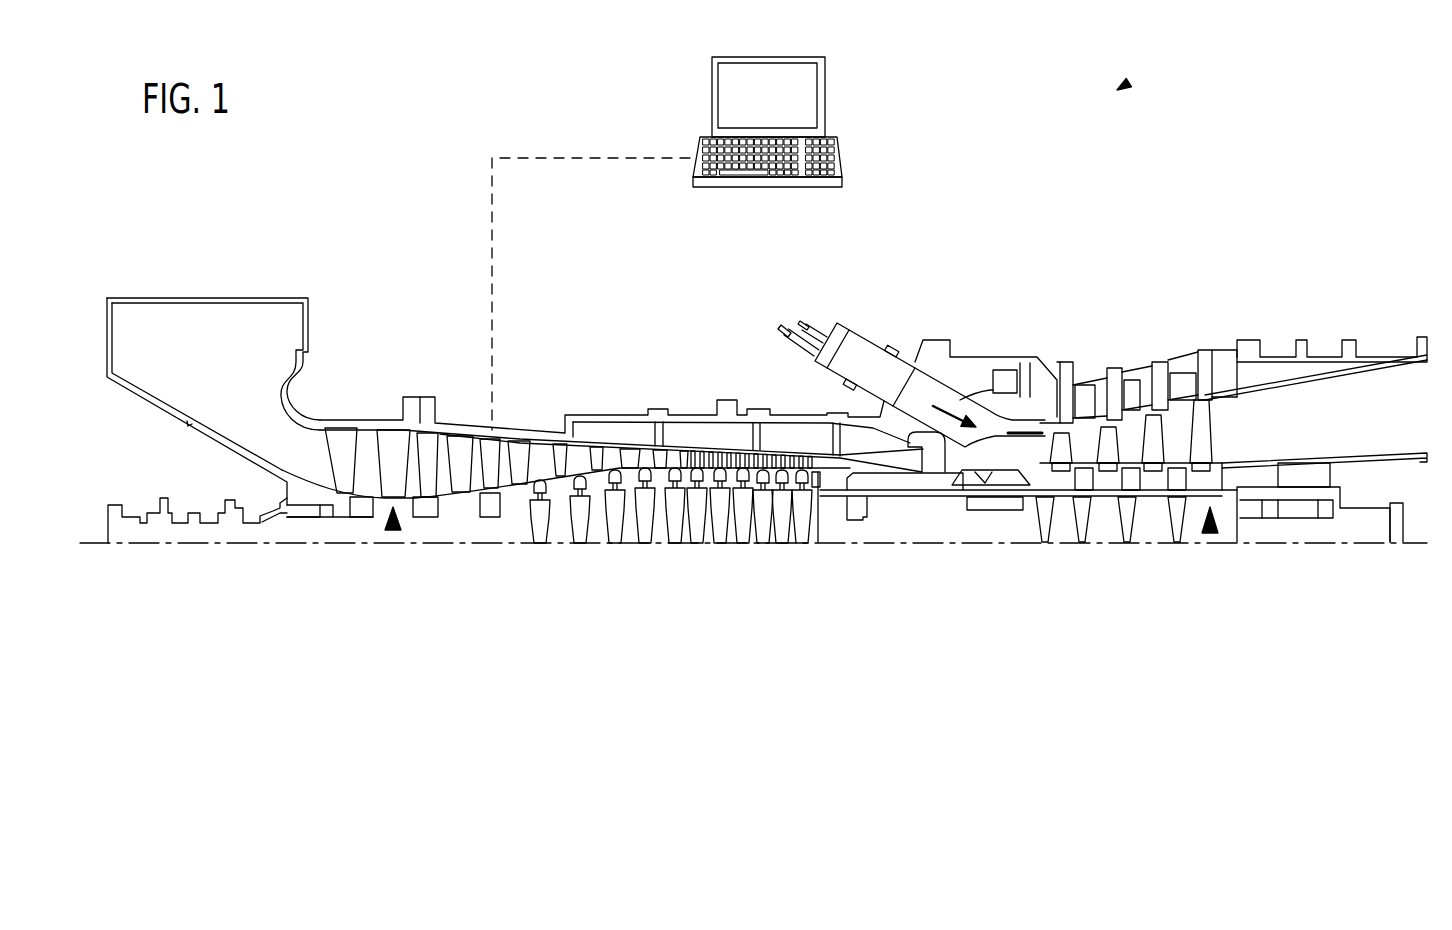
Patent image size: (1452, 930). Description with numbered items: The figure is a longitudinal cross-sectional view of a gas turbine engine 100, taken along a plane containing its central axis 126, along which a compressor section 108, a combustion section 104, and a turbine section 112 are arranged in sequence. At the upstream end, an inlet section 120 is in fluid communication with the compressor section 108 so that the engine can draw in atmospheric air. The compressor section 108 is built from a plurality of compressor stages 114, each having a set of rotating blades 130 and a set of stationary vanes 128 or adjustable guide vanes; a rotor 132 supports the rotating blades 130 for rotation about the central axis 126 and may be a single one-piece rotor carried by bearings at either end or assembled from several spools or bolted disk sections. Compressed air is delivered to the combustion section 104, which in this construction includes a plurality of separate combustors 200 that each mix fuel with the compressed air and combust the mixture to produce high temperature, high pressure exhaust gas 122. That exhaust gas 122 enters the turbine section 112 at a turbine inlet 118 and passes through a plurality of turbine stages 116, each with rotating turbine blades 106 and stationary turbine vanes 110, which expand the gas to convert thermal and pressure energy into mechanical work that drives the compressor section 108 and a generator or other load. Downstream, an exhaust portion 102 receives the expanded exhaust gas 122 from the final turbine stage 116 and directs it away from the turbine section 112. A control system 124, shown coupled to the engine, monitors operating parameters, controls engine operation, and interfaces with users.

The gas turbine engine 100 is at (1129, 83).
The exhaust portion 102 is at (1427, 613).
The combustion section 104 is at (992, 493).
The rotating turbine blades 106 is at (1203, 435).
The compressor section 108 is at (613, 523).
The stationary turbine vanes 110 is at (1175, 423).
The turbine section 112 is at (1161, 494).
The compressor stages 114 is at (810, 613).
The turbine stages 116 is at (1040, 613).
The turbine inlet 118 is at (1027, 437).
The inlet section 120 is at (213, 502).
The exhaust gas 122 is at (948, 412).
The control system 124 is at (825, 93).
The central axis 126 is at (880, 554).
The stationary vanes 128 is at (363, 452).
The rotating blades 130 is at (390, 448).
The rotor 132 is at (108, 613).
The combustors 200 is at (838, 322).